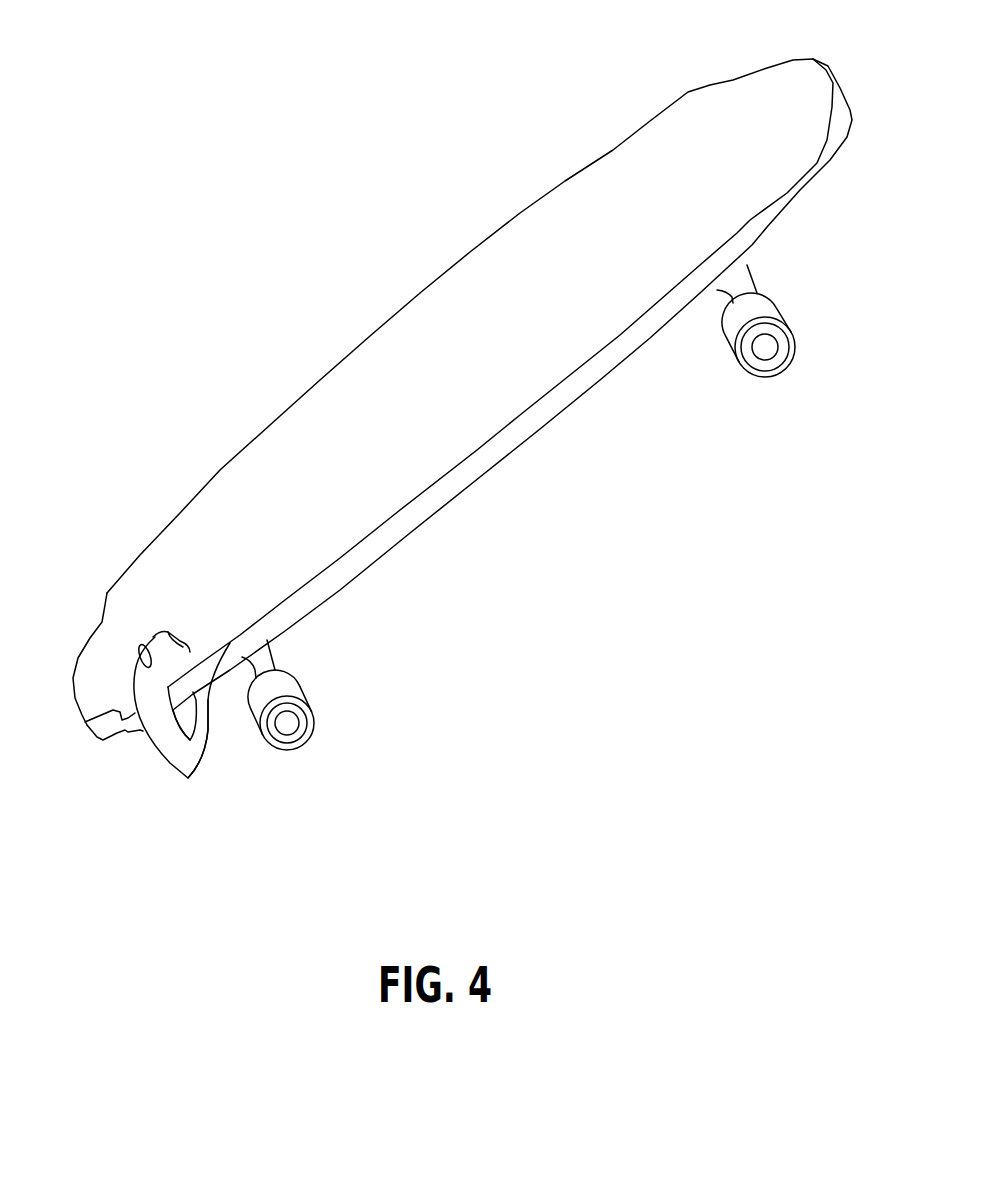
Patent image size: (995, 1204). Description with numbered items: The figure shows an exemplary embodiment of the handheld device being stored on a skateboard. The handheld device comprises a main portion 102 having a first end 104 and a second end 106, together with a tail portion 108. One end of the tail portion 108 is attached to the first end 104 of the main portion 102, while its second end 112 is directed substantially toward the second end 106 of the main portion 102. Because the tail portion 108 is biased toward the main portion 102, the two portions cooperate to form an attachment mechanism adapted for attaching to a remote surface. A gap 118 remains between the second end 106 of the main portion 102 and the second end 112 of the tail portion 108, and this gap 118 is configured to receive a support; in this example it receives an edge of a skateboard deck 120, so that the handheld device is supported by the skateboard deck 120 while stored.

The main portion 102 is at (152, 684).
The first end of the main portion 104 is at (193, 777).
The second end of the main portion 106 is at (158, 633).
The tail portion 108 is at (198, 737).
The second end of the tail portion 112 is at (207, 693).
The gap 118 is at (197, 663).
The skateboard deck 120 is at (240, 620).